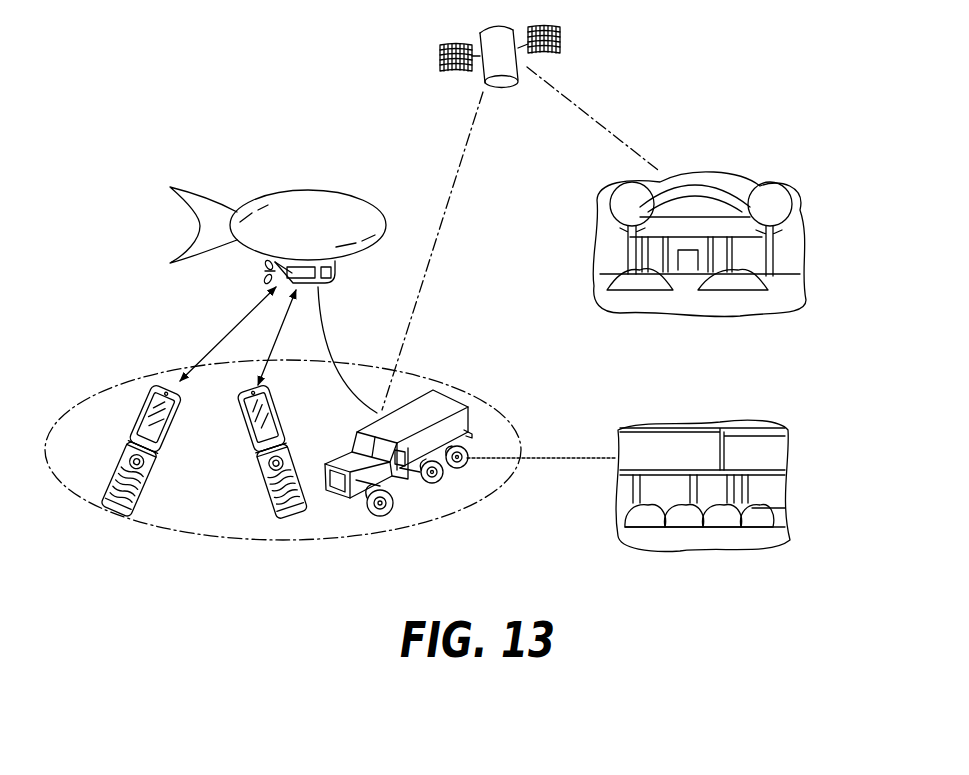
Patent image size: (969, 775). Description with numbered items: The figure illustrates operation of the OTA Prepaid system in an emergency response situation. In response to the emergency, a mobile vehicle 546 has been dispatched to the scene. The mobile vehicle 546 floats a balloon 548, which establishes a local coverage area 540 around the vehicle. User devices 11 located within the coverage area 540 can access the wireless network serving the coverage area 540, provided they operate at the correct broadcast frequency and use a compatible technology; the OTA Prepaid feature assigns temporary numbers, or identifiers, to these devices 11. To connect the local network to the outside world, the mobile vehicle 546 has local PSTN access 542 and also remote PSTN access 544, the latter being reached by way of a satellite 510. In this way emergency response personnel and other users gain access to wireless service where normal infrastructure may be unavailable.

The satellite 510 is at (562, 36).
The balloon 548 is at (308, 189).
The user devices 11 is at (257, 474).
The local coverage area 540 is at (461, 385).
The mobile vehicle 546 is at (440, 478).
The remote PSTN access 544 is at (598, 268).
The local PSTN access 542 is at (620, 500).